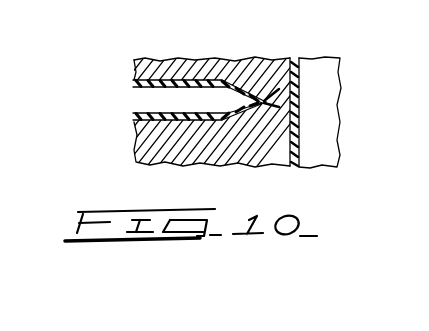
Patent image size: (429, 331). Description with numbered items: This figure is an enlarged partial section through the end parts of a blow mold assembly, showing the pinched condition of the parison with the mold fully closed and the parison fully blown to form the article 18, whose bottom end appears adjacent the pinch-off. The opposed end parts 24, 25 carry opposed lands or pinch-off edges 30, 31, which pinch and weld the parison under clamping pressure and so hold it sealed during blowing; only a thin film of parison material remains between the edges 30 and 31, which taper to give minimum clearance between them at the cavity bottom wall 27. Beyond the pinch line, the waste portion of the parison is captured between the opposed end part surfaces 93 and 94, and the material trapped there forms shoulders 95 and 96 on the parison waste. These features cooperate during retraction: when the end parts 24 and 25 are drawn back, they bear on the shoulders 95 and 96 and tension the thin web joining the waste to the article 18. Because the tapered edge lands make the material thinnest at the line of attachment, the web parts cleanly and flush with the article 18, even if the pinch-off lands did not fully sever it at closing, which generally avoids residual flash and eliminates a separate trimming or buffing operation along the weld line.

The article 18 is at (318, 162).
The end part 24 is at (238, 70).
The end part 25 is at (210, 147).
The cavity bottom wall 27 is at (307, 57).
The pinch-off edge 30 is at (305, 83).
The pinch-off edge 31 is at (293, 110).
The end part surface 93 is at (193, 84).
The end part surface 94 is at (180, 117).
The shoulder 95 is at (279, 60).
The shoulder 96 is at (238, 110).